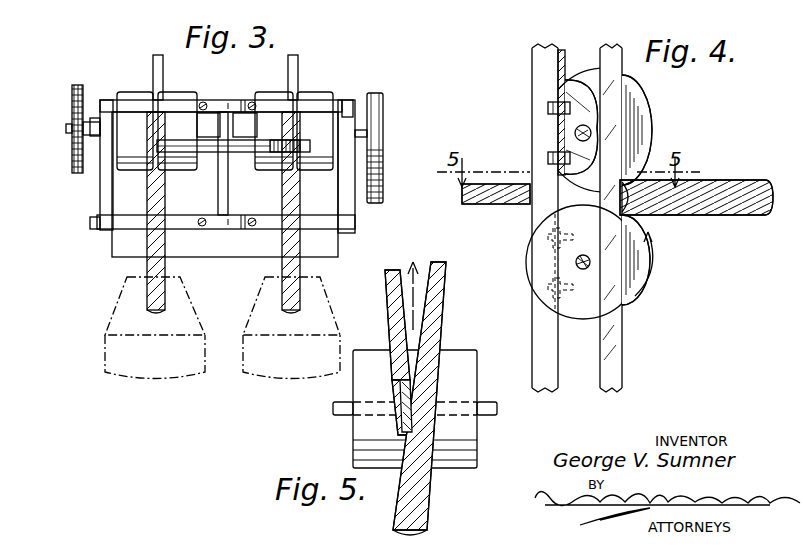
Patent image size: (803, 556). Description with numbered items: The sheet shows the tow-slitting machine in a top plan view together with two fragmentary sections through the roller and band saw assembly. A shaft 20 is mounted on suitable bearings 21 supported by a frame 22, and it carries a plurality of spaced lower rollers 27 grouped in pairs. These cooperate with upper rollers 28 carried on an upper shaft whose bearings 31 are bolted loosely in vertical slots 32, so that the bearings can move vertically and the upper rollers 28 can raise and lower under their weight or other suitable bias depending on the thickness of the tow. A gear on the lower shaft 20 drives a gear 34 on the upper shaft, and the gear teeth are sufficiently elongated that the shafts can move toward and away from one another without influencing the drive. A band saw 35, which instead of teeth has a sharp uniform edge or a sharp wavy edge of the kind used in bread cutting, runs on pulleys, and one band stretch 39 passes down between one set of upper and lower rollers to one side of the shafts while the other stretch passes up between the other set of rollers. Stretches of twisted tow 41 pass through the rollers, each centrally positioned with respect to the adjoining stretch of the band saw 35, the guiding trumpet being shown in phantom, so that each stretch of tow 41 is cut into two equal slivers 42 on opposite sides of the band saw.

In FIG. 3, the shaft 20 is at (384, 130).
In FIG. 5, the shaft 20 is at (422, 430).
In FIG. 4, the shaft 20 is at (575, 262).
In FIG. 4, the bearings 21 is at (528, 292).
In FIG. 3, the frame 22 is at (110, 196).
In FIG. 4, the frame 22 is at (537, 130).
In FIG. 5, the lower rollers 27 is at (357, 380).
In FIG. 4, the lower rollers 27 is at (632, 292).
In FIG. 3, the upper rollers 28 is at (316, 156).
In FIG. 4, the upper rollers 28 is at (655, 158).
In FIG. 4, the bearings 31 is at (568, 128).
In FIG. 4, the vertical slots 32 is at (557, 90).
In FIG. 3, the gear 34 is at (71, 103).
In FIG. 3, the band saw 35 is at (213, 152).
In FIG. 5, the band saw 35 is at (404, 434).
In FIG. 4, the band saw 35 is at (614, 46).
In FIG. 4, the band stretch 39 is at (623, 358).
In FIG. 3, the twisted tow 41 is at (166, 304).
In FIG. 5, the twisted tow 41 is at (432, 505).
In FIG. 4, the twisted tow 41 is at (722, 186).
In FIG. 5, the slivers 42 is at (388, 312).